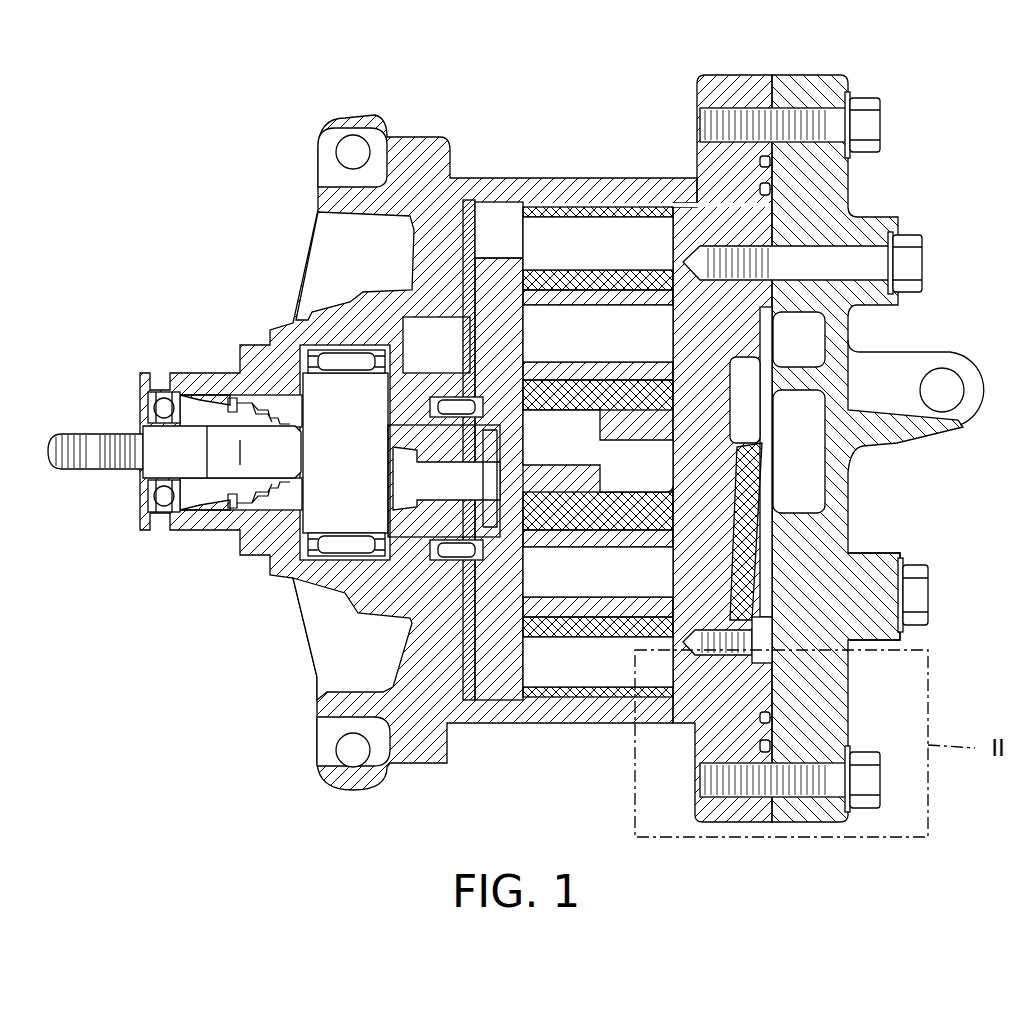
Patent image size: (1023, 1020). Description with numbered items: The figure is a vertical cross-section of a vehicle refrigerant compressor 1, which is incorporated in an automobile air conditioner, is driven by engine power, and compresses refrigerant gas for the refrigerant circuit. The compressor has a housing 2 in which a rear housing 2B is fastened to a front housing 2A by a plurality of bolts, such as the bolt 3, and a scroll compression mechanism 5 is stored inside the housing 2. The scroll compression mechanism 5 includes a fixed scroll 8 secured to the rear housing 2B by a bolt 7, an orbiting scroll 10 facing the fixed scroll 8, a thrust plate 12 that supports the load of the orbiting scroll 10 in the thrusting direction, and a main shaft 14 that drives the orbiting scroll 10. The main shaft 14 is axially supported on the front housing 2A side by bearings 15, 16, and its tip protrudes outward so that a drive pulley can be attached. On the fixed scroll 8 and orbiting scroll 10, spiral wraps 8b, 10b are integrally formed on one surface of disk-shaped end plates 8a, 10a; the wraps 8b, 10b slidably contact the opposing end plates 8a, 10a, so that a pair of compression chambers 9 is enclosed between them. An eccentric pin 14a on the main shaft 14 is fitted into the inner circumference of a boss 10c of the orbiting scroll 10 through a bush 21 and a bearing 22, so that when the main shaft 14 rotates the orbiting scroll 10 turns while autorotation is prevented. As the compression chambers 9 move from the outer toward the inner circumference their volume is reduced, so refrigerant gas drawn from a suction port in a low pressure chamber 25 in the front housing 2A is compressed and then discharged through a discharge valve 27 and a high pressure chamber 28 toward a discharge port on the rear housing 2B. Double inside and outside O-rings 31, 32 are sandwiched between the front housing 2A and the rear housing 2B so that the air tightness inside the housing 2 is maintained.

The vehicle refrigerant compressor 1 is at (163, 178).
The housing 2 is at (828, 411).
The front housing 2A is at (720, 82).
The rear housing 2B is at (867, 428).
The bolt 3 is at (881, 120).
The scroll compression mechanism 5 is at (469, 353).
The bolt 7 is at (925, 263).
The fixed scroll 8 is at (604, 193).
The end plate 8a is at (673, 568).
The spiral wrap 8b is at (612, 312).
The compression chamber 9 is at (588, 322).
The orbiting scroll 10 is at (497, 240).
The end plate 10a is at (527, 345).
The spiral wrap 10b is at (596, 266).
The boss 10c is at (418, 388).
The thrust plate 12 is at (463, 232).
The main shaft 14 is at (223, 440).
The eccentric pin 14a is at (487, 458).
The bearing 15 is at (163, 404).
The bearing 16 is at (338, 360).
The bush 21 is at (404, 433).
The bearing 22 is at (456, 406).
The low pressure chamber 25 is at (491, 218).
The discharge valve 27 is at (737, 470).
The high pressure chamber 28 is at (848, 553).
The O-ring 31 is at (771, 717).
The O-ring 32 is at (771, 746).